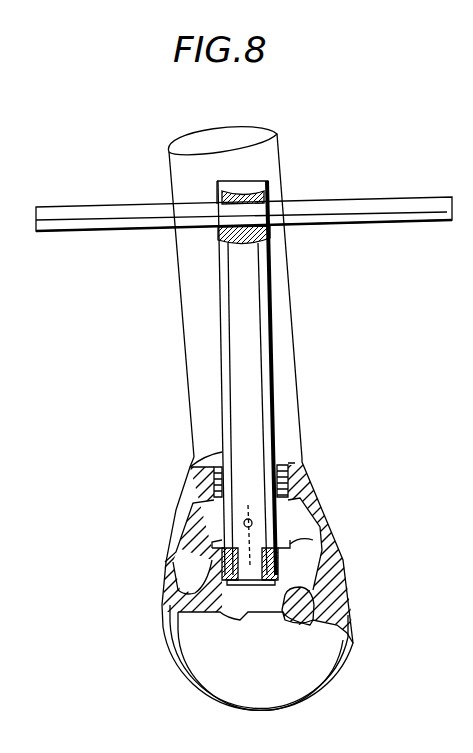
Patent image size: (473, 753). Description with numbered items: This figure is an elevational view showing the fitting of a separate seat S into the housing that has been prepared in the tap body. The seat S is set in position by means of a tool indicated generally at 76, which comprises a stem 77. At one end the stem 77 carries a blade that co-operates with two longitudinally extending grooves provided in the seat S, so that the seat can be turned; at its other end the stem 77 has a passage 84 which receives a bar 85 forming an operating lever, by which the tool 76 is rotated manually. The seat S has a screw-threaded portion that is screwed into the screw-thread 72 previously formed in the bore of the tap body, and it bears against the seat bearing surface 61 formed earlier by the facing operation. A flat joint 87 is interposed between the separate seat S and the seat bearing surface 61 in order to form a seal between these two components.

The bar 85 is at (77, 212).
The passage 84 is at (228, 240).
The tool 76 is at (310, 268).
The stem 77 is at (262, 370).
The seat bearing surface 61 is at (226, 568).
The flat joint 87 is at (228, 574).
The screw-thread 72 is at (266, 608).
The separate seat S is at (296, 540).